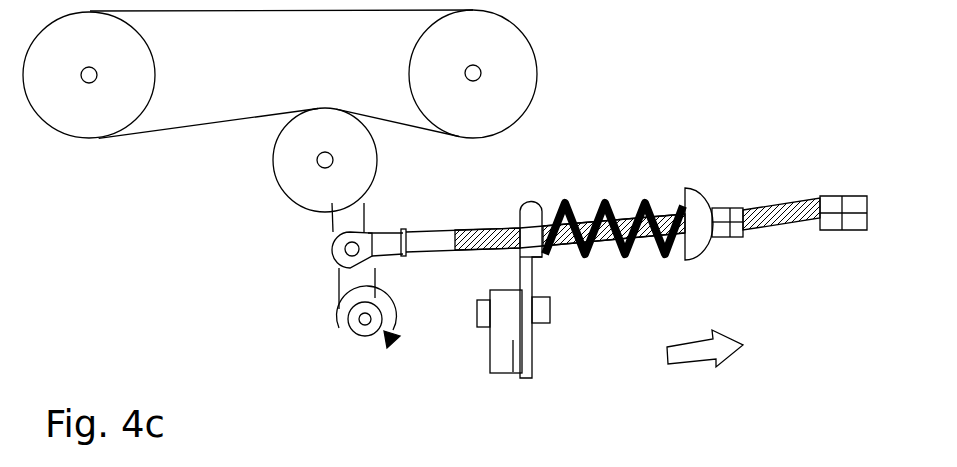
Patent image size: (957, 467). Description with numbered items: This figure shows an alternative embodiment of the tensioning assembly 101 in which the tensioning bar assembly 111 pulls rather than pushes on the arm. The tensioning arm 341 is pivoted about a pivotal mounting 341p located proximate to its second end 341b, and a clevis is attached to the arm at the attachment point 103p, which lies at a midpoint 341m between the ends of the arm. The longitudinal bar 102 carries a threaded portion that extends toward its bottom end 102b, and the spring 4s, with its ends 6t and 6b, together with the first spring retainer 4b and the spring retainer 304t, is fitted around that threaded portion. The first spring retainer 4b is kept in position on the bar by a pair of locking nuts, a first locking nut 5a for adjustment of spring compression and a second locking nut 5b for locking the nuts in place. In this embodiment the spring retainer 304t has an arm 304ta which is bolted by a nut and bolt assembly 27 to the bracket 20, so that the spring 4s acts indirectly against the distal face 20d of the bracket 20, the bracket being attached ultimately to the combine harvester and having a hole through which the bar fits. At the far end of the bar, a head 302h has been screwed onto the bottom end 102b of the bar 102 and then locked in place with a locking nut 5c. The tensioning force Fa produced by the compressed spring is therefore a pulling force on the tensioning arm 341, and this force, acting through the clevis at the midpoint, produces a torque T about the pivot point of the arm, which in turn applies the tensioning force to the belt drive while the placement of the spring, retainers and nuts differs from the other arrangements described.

The tensioning assembly 101 is at (186, 201).
The tensioning arm 341 is at (327, 221).
The midpoint 341m is at (318, 251).
The attachment point 103p is at (333, 262).
The second end 341b is at (334, 327).
The pivotal mounting 341p is at (360, 337).
The torque T is at (368, 332).
The longitudinal bar 102 is at (434, 232).
The spring retainer 304t is at (534, 201).
The arm 304ta is at (523, 277).
The spring 4s is at (608, 200).
The spring end 6t is at (557, 262).
The spring end 6b is at (679, 250).
The first spring retainer 4b is at (700, 197).
The tensioning bar assembly 111 is at (667, 166).
The first locking nut 5a is at (720, 238).
The second locking nut 5b is at (745, 237).
The bottom end 102b is at (803, 182).
The locking nut 5c is at (824, 197).
The head 302h is at (851, 232).
The bracket 20 is at (524, 378).
The distal face 20d is at (531, 367).
The nut and bolt assembly 27 is at (535, 306).
The tensioning force Fa is at (705, 366).